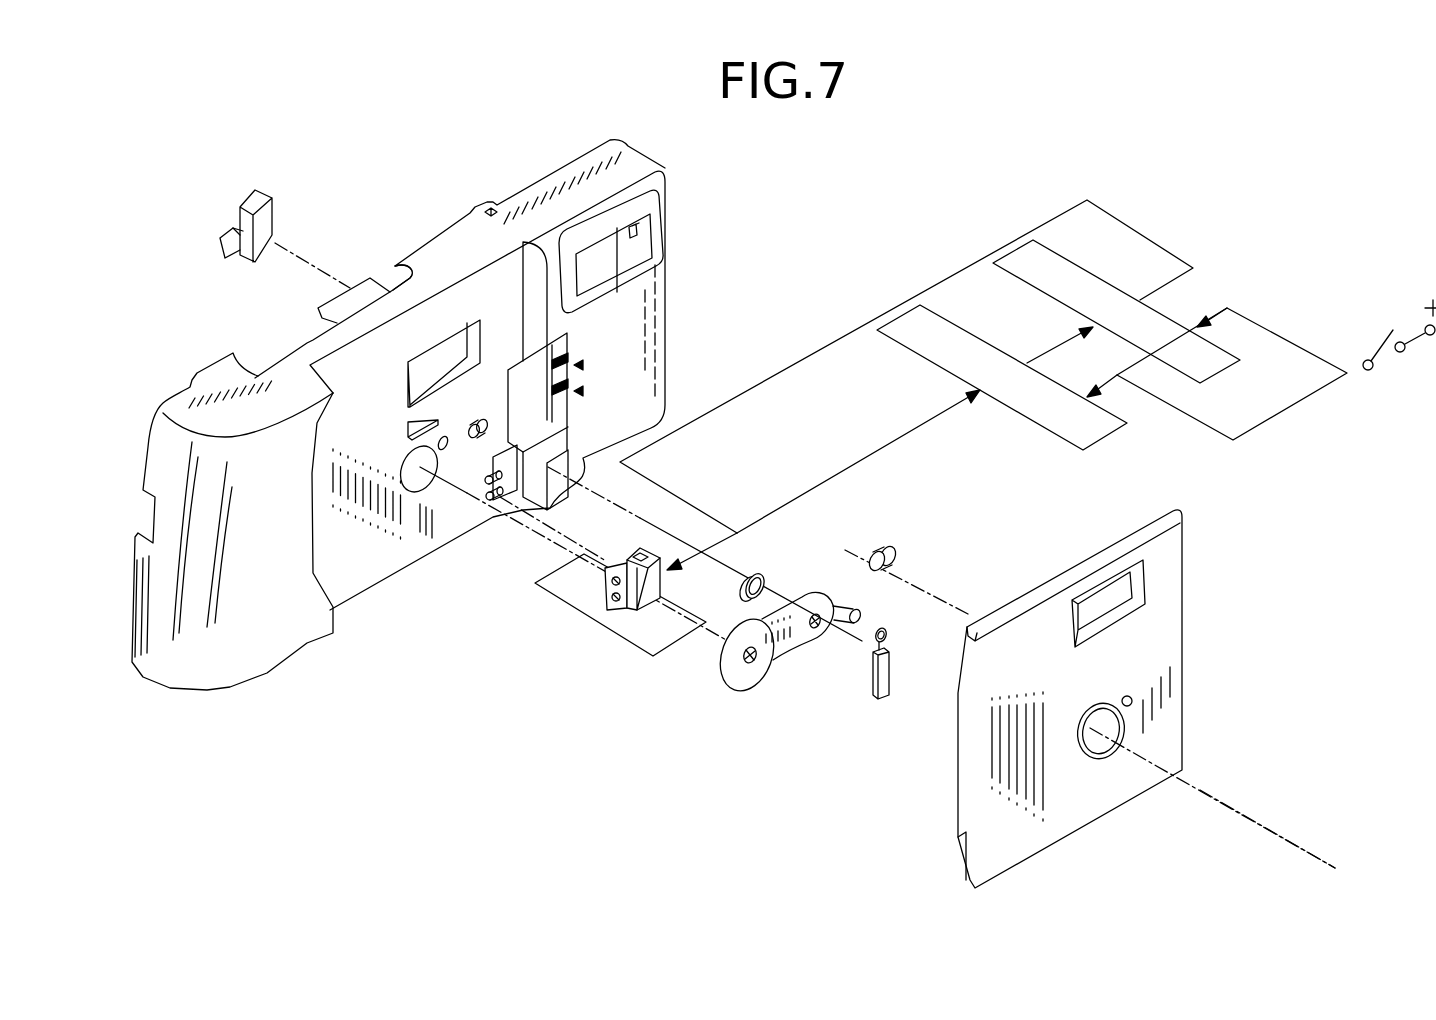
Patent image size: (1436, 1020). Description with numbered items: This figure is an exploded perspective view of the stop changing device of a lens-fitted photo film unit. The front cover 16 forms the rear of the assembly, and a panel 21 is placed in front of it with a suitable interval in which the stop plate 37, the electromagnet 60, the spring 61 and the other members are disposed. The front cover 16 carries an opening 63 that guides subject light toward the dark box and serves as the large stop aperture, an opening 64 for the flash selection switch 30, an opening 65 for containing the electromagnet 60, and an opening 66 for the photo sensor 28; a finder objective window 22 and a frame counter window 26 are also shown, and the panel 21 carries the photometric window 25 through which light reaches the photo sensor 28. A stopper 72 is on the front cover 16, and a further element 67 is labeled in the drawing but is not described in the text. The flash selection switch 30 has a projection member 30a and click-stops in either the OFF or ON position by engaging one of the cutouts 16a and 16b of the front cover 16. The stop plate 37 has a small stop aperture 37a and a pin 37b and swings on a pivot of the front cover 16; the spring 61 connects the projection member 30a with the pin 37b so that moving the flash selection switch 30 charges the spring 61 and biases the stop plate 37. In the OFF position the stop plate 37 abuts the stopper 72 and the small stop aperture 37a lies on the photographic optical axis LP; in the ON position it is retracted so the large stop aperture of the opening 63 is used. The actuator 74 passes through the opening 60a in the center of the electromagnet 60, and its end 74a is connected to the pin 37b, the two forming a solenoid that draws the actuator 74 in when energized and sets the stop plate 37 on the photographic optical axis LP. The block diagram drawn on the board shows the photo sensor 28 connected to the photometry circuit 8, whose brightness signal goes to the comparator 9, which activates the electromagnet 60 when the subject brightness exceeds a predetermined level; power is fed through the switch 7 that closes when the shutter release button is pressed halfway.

The switch 7 is at (1378, 342).
The photometry circuit 8 is at (900, 346).
The comparator 9 is at (1023, 280).
The front cover 16 is at (258, 681).
The cutout 16a is at (566, 358).
The cutout 16b is at (563, 392).
The panel 21 is at (1052, 795).
The finder objective window 22 is at (437, 359).
The photometric window 25 is at (1130, 698).
The frame counter window 26 is at (394, 264).
The photo sensor 28 is at (894, 556).
The flash selection switch 30 is at (268, 226).
The projection member 30a is at (226, 246).
The stop plate 37 is at (722, 670).
The small stop aperture 37a is at (753, 663).
The pin 37b is at (838, 618).
The electromagnet 60 is at (660, 586).
The opening 60a is at (633, 557).
The spring 61 is at (785, 590).
The opening 63 is at (416, 494).
The opening 64 is at (520, 368).
The opening 65 is at (513, 493).
The opening 66 is at (446, 437).
The pin 67 is at (473, 438).
The stopper 72 is at (412, 426).
The actuator 74 is at (872, 670).
The end 74a is at (887, 637).
The photographic optical axis LP is at (1207, 802).